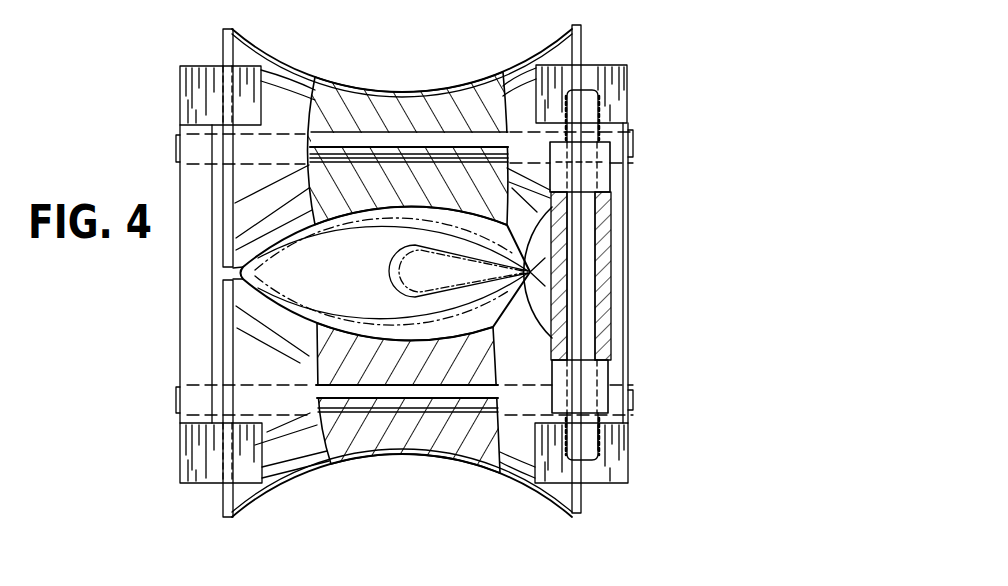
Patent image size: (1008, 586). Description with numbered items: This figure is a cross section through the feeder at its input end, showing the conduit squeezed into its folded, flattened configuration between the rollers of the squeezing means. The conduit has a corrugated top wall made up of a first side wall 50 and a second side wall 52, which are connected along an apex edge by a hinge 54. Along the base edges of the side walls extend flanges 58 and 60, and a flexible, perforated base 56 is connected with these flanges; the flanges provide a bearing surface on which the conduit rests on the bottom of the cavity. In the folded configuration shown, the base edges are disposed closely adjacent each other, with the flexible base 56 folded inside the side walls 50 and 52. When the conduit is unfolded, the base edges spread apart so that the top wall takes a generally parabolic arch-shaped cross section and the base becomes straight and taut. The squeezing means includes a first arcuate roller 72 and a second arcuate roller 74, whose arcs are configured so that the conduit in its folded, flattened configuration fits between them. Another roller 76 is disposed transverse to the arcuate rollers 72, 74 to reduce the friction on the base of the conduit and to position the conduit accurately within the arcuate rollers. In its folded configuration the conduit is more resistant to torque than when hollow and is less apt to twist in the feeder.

The first side wall 50 is at (372, 216).
The second side wall 52 is at (392, 342).
The hinge 54 is at (270, 275).
The flexible, perforated base 56 is at (388, 264).
The flange 58 is at (610, 203).
The flange 60 is at (523, 320).
The first arcuate roller 72 is at (581, 495).
The second arcuate roller 74 is at (566, 54).
The roller 76 is at (587, 337).